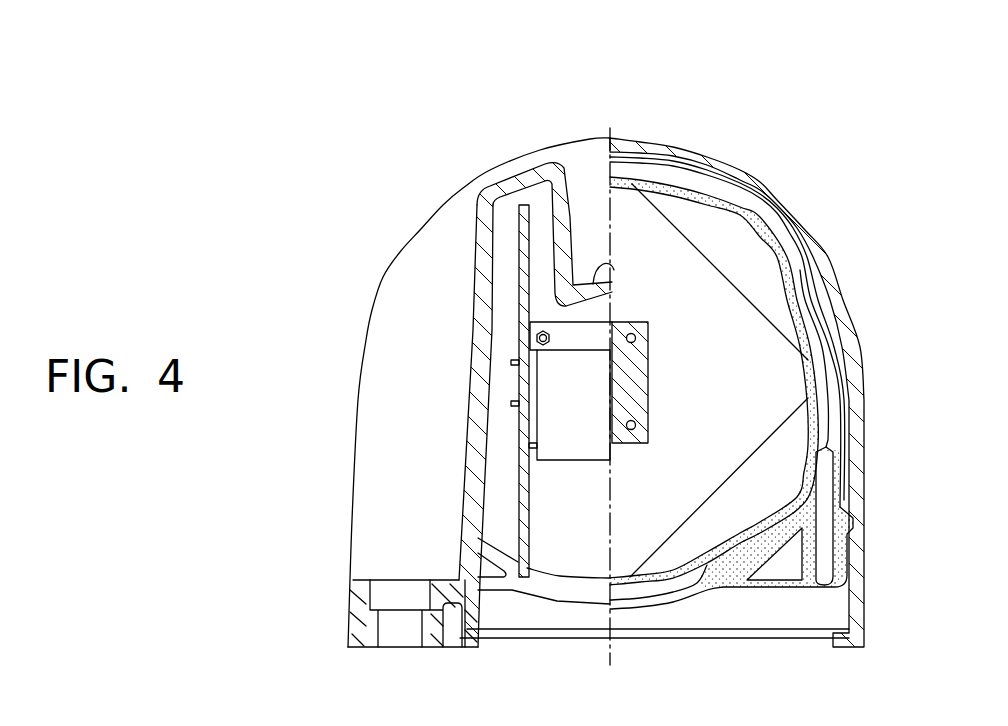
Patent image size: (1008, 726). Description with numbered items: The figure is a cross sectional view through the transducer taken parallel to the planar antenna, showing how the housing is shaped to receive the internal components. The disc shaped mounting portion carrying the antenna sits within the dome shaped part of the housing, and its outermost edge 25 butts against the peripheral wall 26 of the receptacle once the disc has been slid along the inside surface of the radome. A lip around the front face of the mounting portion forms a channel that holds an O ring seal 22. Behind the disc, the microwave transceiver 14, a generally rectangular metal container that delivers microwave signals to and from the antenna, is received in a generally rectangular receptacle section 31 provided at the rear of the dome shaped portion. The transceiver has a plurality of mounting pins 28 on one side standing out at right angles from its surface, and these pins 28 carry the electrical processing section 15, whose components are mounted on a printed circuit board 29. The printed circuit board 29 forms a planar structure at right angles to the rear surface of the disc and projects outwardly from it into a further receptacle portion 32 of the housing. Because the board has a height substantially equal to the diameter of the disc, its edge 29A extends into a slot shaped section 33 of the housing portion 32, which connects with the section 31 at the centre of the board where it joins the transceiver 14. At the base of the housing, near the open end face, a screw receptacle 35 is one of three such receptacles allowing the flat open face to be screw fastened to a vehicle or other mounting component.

The microwave transceiver 14 is at (640, 378).
The electrical processing section 15 is at (531, 493).
The O ring seal 22 is at (757, 222).
The outermost edge of the disc 25 is at (703, 176).
The peripheral wall 26 is at (667, 147).
The mounting pins 28 is at (513, 360).
The printed circuit board 29 is at (527, 493).
The edge of the PCB 29A is at (526, 200).
The rectangular receptacle section 31 is at (613, 270).
The further receptacle portion 32 is at (497, 192).
The slot shaped section 33 is at (492, 297).
The screw receptacle 35 is at (348, 637).